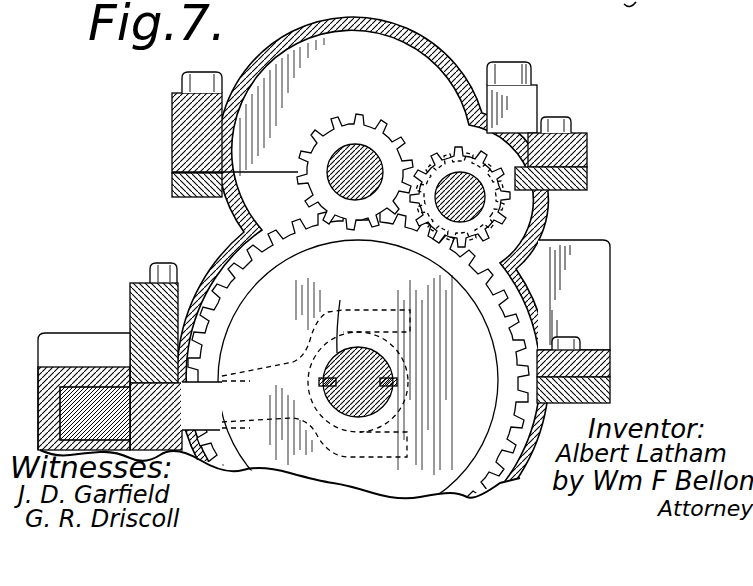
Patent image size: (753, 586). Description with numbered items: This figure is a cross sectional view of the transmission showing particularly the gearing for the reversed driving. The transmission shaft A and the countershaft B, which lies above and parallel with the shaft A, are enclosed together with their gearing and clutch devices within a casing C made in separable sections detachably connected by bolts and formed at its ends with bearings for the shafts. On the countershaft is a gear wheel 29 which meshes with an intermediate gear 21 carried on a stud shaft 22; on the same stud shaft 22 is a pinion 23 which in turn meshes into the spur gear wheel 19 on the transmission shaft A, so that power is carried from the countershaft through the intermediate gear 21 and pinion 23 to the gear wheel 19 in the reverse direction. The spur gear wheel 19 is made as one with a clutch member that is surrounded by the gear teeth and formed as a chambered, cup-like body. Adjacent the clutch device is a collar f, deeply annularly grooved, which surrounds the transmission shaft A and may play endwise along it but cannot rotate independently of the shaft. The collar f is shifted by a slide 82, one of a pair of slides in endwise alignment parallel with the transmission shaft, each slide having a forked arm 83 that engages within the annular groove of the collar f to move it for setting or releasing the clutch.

The casing C is at (450, 52).
The spur gear wheel 19 is at (292, 224).
The intermediate gear 21 is at (440, 142).
The stud shaft 22 is at (444, 200).
The pinion 23 is at (452, 240).
The gear wheel 29 is at (352, 120).
The countershaft B is at (345, 160).
The transmission shaft A is at (328, 315).
The collar f is at (264, 337).
The slide 82 is at (92, 398).
The forked arm 83 is at (215, 405).